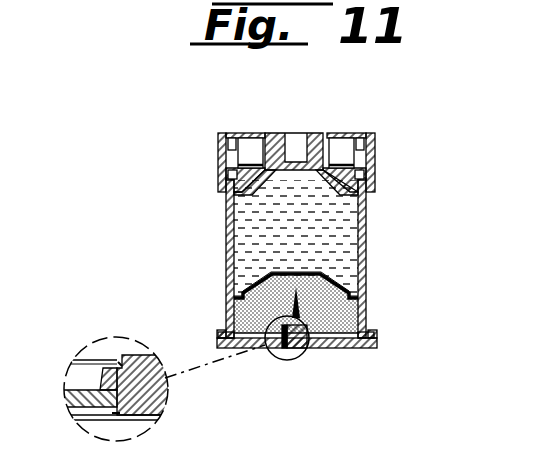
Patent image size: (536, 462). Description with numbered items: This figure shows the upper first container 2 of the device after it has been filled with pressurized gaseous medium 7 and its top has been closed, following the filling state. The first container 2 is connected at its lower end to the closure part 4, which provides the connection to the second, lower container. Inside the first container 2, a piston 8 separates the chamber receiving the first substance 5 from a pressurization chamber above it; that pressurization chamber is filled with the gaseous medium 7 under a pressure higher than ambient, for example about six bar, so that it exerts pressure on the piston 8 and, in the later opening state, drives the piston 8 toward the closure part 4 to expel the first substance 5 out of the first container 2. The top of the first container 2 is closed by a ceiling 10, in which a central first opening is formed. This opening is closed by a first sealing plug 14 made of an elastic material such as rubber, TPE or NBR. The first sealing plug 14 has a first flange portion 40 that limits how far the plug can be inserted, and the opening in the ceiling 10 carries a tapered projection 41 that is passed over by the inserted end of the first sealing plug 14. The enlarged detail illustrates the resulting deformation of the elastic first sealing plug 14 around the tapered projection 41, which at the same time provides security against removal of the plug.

The first container 2 is at (229, 218).
The closure part 4 is at (226, 160).
The first substance 5 is at (296, 240).
The gaseous medium 7 is at (333, 305).
The piston 8 is at (350, 290).
The ceiling 10 is at (376, 345).
The first sealing plug 14 is at (138, 366).
The first flange portion 40 is at (116, 414).
The tapered projection 41 is at (118, 364).